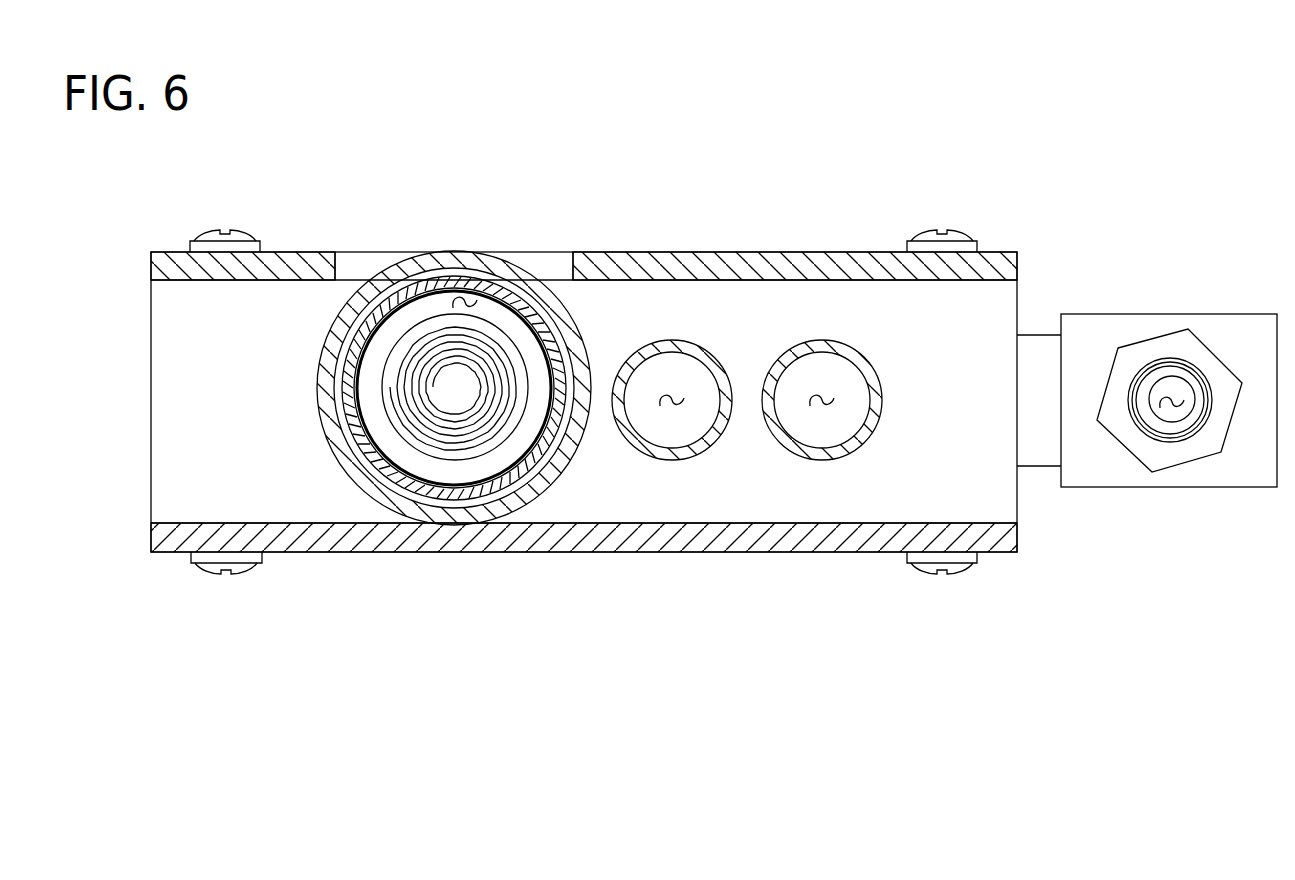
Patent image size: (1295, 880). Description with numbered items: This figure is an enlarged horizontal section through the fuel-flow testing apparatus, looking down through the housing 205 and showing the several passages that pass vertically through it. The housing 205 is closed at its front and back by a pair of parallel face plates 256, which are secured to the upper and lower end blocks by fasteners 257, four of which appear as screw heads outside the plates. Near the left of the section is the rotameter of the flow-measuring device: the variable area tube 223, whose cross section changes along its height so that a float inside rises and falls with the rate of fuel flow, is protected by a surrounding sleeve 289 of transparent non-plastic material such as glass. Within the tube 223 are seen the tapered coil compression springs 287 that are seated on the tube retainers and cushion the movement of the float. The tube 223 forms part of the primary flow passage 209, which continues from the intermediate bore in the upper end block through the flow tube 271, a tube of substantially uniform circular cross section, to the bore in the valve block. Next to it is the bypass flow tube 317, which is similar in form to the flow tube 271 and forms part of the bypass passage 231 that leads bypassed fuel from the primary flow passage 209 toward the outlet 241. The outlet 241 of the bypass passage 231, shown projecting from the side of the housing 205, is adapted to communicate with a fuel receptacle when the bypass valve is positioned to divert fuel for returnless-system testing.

The housing 205 is at (697, 565).
The face plates 256 is at (763, 252).
The fasteners 257 is at (213, 230).
The sleeve 289 is at (362, 487).
The tube 223 is at (420, 490).
The tapered coil compression springs 287 is at (430, 340).
The primary flow passage 209 is at (473, 297).
The flow tube 271 is at (678, 342).
The bypass flow tube 317 is at (830, 342).
The bypass passage 231 is at (822, 405).
The outlet 241 is at (1170, 405).